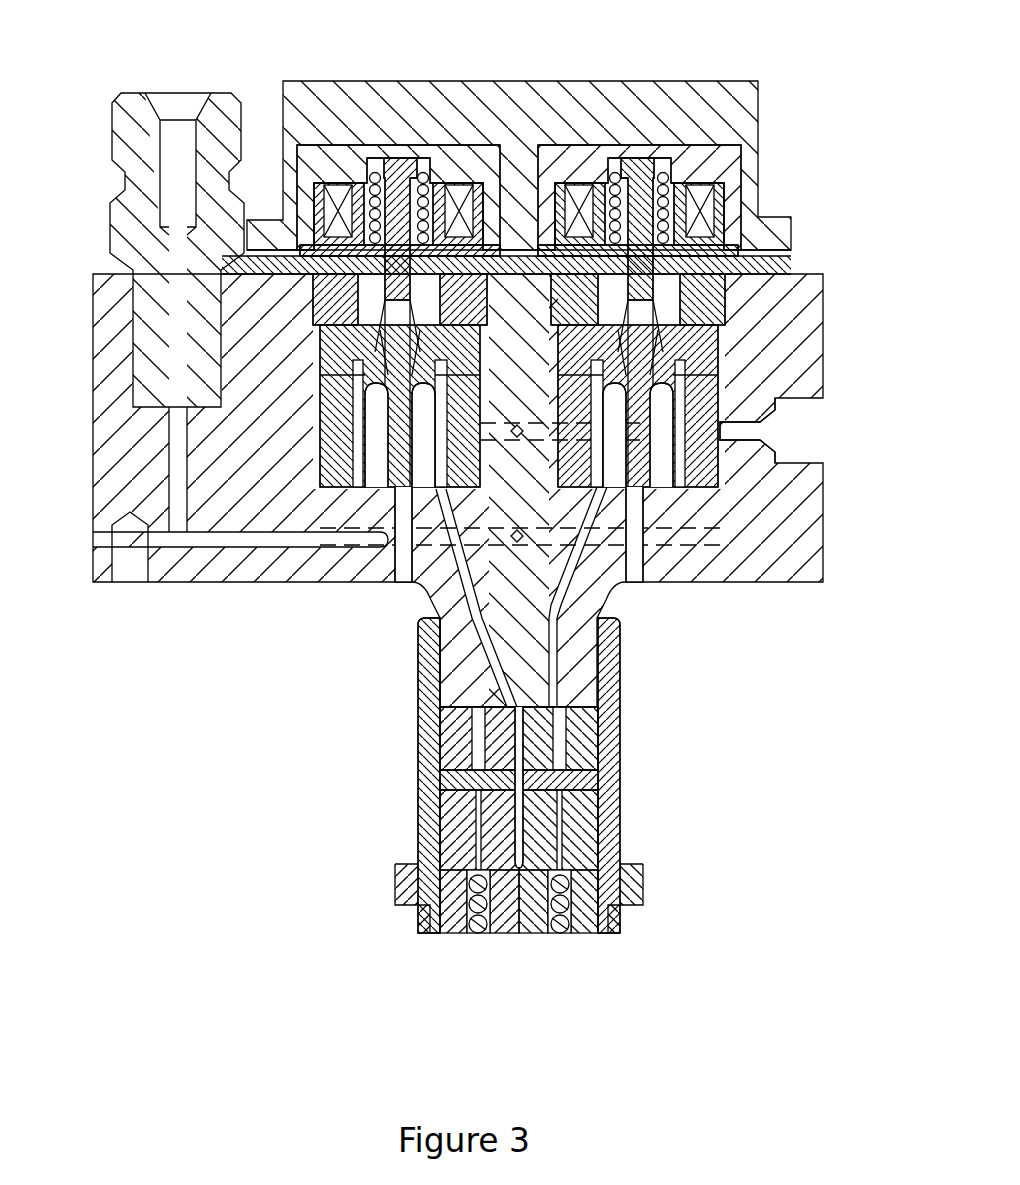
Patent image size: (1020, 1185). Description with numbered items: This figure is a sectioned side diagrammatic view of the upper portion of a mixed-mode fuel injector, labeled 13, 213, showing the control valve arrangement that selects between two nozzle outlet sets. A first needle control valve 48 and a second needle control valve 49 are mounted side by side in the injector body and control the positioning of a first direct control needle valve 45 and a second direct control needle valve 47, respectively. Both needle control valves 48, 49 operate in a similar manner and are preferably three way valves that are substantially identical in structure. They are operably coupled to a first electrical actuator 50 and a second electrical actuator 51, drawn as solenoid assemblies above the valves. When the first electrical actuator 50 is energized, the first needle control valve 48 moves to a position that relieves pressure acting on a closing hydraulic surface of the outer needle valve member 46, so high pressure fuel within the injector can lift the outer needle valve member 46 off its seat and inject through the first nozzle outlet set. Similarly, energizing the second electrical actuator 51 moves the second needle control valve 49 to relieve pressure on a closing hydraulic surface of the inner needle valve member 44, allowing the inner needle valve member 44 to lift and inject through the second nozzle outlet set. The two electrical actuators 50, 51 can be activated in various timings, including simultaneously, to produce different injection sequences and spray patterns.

The valve assembly 13 is at (521, 138).
The valve assembly 213 is at (506, 177).
The second electrical actuator 51 is at (459, 155).
The first electrical actuator 50 is at (691, 158).
The second needle control valve 49 is at (332, 341).
The first needle control valve 48 is at (704, 316).
The first direct control needle valve 45 is at (467, 828).
The inner needle valve member 44 is at (558, 843).
The outer needle valve member 46 is at (472, 878).
The second direct control needle valve 47 is at (551, 878).